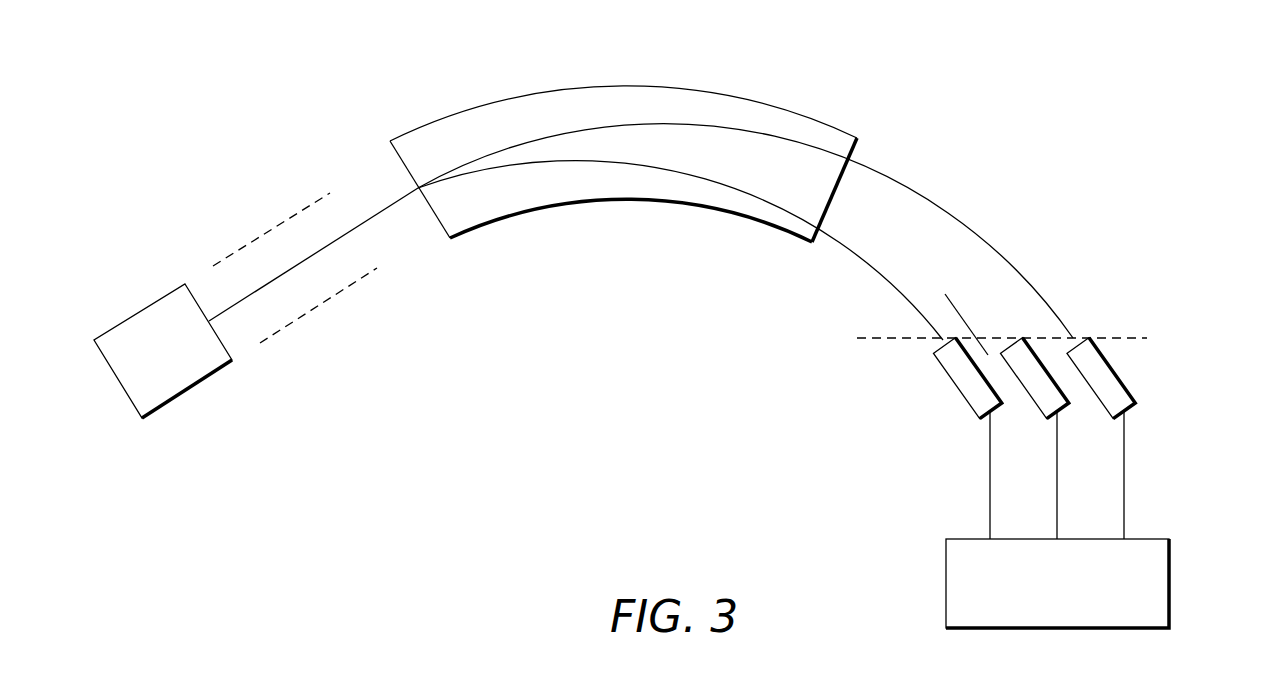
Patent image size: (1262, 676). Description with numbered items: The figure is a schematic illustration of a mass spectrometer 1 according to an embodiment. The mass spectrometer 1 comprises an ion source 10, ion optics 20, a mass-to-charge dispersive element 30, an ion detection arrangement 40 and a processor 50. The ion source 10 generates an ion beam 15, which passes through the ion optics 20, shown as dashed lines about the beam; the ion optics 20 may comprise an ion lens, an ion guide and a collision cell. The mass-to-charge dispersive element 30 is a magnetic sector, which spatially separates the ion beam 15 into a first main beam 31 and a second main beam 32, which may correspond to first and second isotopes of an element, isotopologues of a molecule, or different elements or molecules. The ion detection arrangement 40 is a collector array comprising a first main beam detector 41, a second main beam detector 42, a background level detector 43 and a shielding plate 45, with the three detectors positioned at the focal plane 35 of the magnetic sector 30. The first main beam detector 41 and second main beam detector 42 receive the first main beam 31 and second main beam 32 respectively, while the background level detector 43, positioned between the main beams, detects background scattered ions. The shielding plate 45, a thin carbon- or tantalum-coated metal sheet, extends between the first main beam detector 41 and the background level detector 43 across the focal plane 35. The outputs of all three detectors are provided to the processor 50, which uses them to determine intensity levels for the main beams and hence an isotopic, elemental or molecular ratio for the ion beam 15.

The mass spectrometer 1 is at (234, 70).
The ion source 10 is at (163, 351).
The ion beam 15 is at (362, 222).
The ion optics 20 is at (274, 223).
The mass-to-charge dispersive element 30 is at (612, 86).
The first main beam 31 is at (848, 245).
The second main beam 32 is at (927, 197).
The focal plane 35 is at (1129, 337).
The ion detection arrangement 40 is at (1190, 336).
The first main beam detector 41 is at (965, 403).
The second main beam detector 42 is at (1122, 380).
The background level detector 43 is at (1040, 412).
The shielding plate 45 is at (960, 313).
The processor 50 is at (1057, 583).